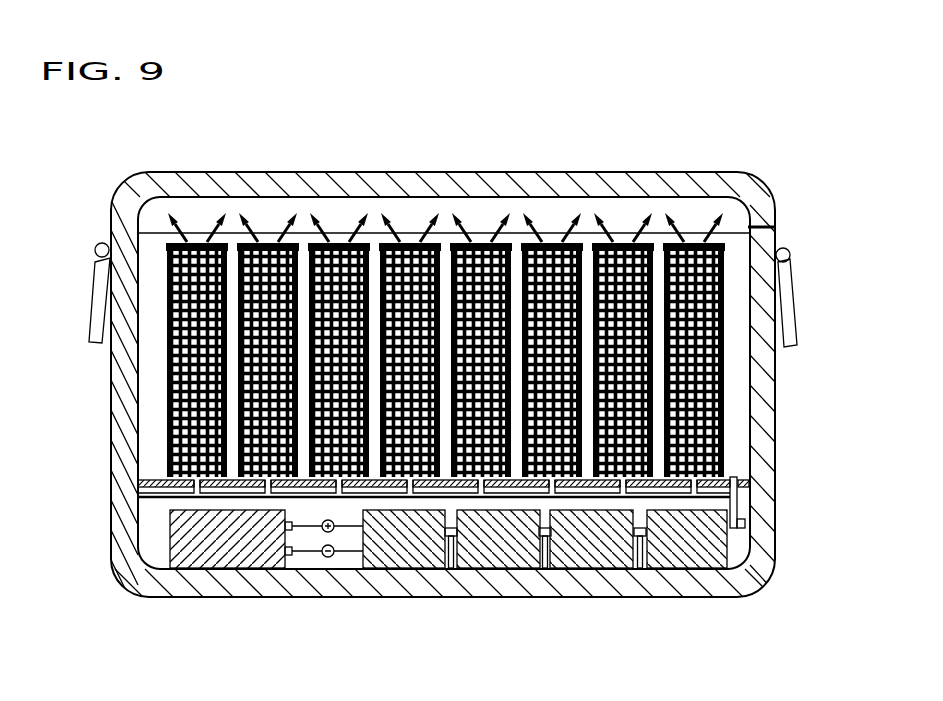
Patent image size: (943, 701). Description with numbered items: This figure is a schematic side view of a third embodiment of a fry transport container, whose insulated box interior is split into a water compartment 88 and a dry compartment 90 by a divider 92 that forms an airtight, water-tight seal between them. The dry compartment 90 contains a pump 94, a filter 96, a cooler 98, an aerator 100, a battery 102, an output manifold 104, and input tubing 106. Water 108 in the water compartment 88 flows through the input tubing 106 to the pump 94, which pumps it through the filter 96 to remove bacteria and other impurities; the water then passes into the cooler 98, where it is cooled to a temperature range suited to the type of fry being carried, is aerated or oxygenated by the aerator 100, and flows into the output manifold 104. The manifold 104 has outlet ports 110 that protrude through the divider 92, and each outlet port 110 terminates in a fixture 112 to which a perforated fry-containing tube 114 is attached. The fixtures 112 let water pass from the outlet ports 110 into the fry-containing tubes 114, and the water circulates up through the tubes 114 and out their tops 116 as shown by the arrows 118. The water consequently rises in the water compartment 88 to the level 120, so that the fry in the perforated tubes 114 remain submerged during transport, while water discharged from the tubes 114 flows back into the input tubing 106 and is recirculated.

The water compartment 88 is at (550, 213).
The dry compartment 90 is at (334, 558).
The divider 92 is at (147, 473).
The pump 94 is at (700, 572).
The filter 96 is at (600, 572).
The cooler 98 is at (506, 572).
The aerator 100 is at (417, 572).
The battery 102 is at (224, 556).
The output manifold 104 is at (700, 502).
The input tubing 106 is at (450, 572).
The water 108 is at (737, 324).
The outlet ports 110 is at (190, 488).
The fixture 112 is at (703, 473).
The fry-containing tube 114 is at (722, 383).
The tops 116 is at (264, 243).
The arrows 118 is at (448, 212).
The water level 120 is at (776, 203).